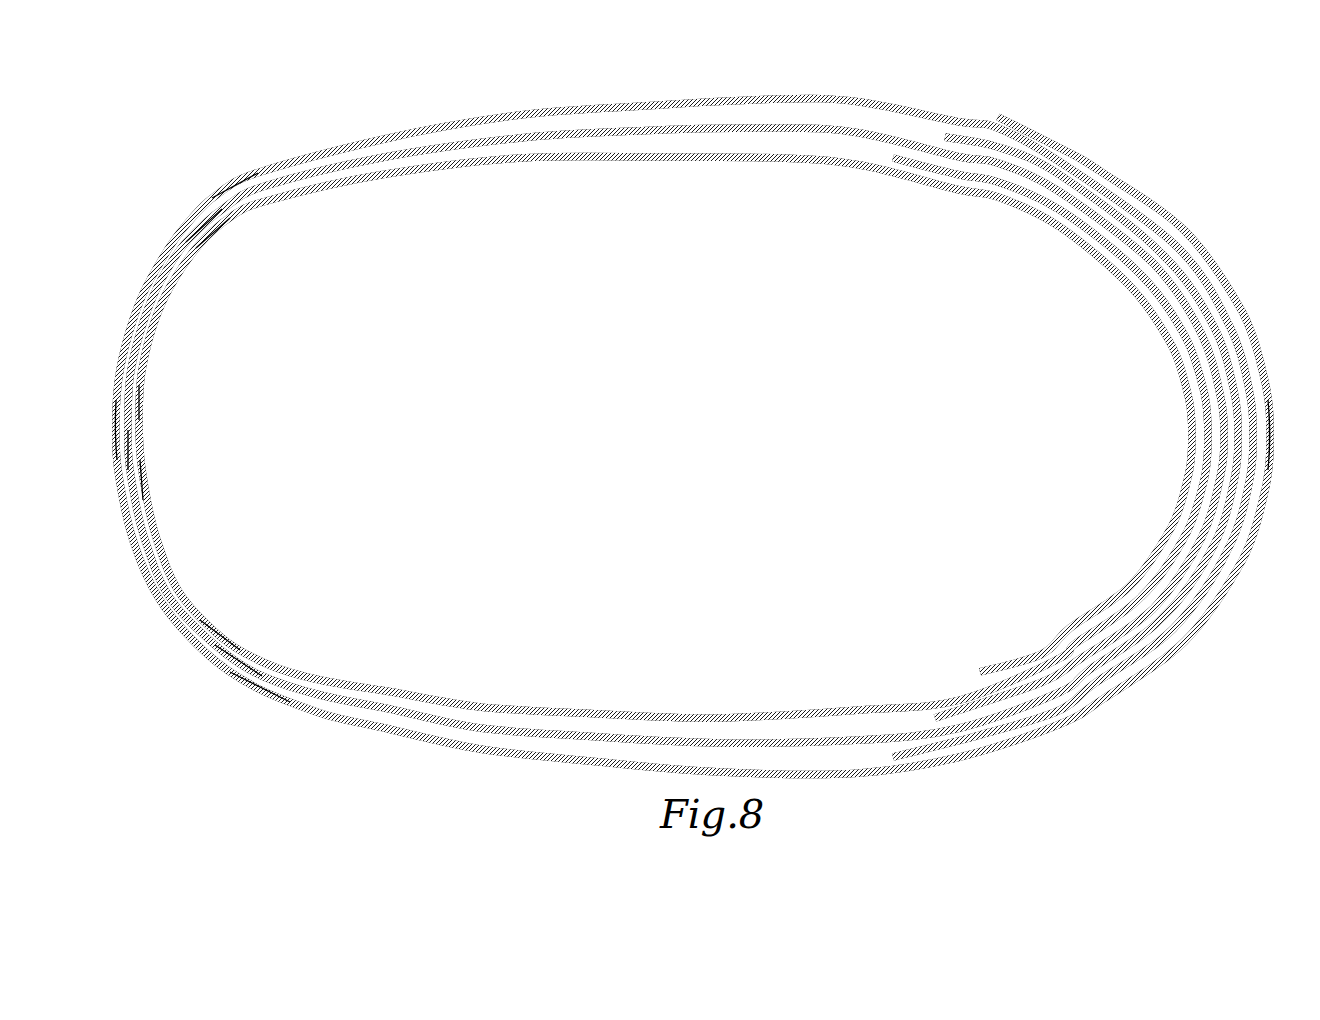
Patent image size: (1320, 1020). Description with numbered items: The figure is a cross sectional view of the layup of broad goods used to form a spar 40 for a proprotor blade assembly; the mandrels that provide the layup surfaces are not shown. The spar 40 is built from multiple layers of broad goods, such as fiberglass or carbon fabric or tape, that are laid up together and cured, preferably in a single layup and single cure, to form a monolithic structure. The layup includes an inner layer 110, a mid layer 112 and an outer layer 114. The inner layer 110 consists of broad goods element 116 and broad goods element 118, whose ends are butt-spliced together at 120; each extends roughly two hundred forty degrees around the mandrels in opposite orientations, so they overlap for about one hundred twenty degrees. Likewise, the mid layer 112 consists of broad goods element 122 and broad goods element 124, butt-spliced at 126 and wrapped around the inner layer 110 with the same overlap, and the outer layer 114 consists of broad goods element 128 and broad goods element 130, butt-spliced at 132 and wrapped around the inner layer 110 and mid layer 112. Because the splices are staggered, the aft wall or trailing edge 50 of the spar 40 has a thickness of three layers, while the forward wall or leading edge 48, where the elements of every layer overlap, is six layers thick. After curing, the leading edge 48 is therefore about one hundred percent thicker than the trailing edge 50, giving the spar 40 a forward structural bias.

The spar 40 is at (704, 412).
The forward wall or leading edge 48 is at (1275, 455).
The aft wall or trailing edge 50 is at (118, 432).
The inner layer 110 is at (582, 168).
The mid layer 112 is at (520, 148).
The outer layer 114 is at (520, 106).
The broad goods element 116 is at (213, 614).
The broad goods element 118 is at (205, 242).
The butt splice 120 is at (140, 480).
The broad goods element 122 is at (225, 655).
The broad goods element 124 is at (200, 216).
The butt splice 126 is at (130, 401).
The broad goods element 128 is at (258, 685).
The broad goods element 130 is at (233, 181).
The butt splice 132 is at (125, 452).